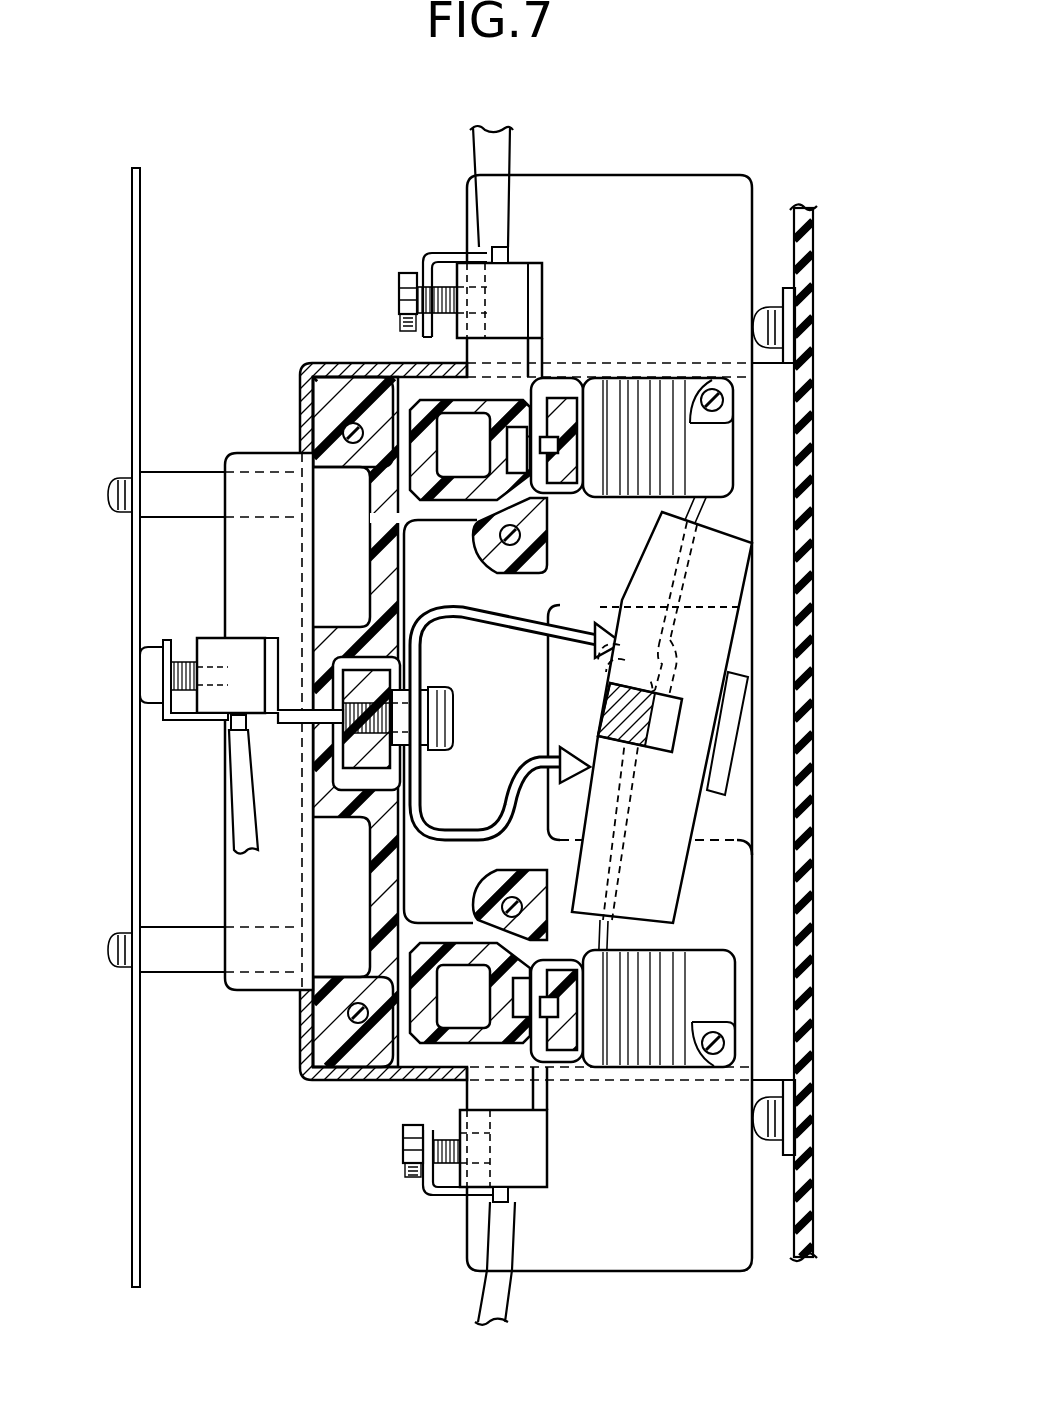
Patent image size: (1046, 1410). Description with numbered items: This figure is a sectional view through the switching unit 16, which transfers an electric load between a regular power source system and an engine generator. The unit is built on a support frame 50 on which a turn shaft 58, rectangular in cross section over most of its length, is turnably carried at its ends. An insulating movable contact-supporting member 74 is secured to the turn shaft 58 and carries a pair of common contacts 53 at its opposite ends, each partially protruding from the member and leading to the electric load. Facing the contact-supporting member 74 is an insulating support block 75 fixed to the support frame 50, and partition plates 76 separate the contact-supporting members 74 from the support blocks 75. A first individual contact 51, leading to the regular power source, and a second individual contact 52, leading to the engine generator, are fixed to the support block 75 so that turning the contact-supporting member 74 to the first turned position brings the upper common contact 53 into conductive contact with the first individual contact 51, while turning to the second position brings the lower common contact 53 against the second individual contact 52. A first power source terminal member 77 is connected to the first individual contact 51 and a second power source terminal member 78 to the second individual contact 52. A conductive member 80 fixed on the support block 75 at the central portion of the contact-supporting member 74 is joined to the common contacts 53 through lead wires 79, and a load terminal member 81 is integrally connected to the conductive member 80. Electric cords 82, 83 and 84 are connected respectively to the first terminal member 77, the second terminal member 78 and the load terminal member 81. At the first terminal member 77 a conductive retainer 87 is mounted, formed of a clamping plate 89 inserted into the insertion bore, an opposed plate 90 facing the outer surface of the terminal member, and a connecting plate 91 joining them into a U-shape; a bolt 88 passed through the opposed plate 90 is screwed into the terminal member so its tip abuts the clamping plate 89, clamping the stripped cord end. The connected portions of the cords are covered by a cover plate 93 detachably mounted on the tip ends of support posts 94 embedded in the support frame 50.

The switching unit 16 is at (360, 1105).
The support frame 50 is at (352, 362).
The first individual contact 51 is at (590, 423).
The second individual contact 52 is at (590, 1020).
The common contact 53 is at (713, 463).
The turn shaft 58 is at (610, 725).
The movable contact-supporting member 74 is at (675, 828).
The support block 75 is at (335, 425).
The partition plate 76 is at (262, 990).
The first power source terminal member 77 is at (520, 268).
The second power source terminal member 78 is at (520, 1180).
The lead wire 79 is at (378, 772).
The conductive member 80 is at (483, 622).
The load terminal member 81 is at (243, 650).
The electric cord 82 is at (493, 150).
The electric cord 83 is at (498, 1235).
The electric cord 84 is at (230, 802).
The retainer 87 is at (432, 243).
The bolt 88 is at (403, 275).
The clamping plate 89 is at (486, 338).
The opposed plate 90 is at (402, 300).
The connecting plate 91 is at (449, 252).
The cover plate 93 is at (134, 800).
The support post 94 is at (172, 490).